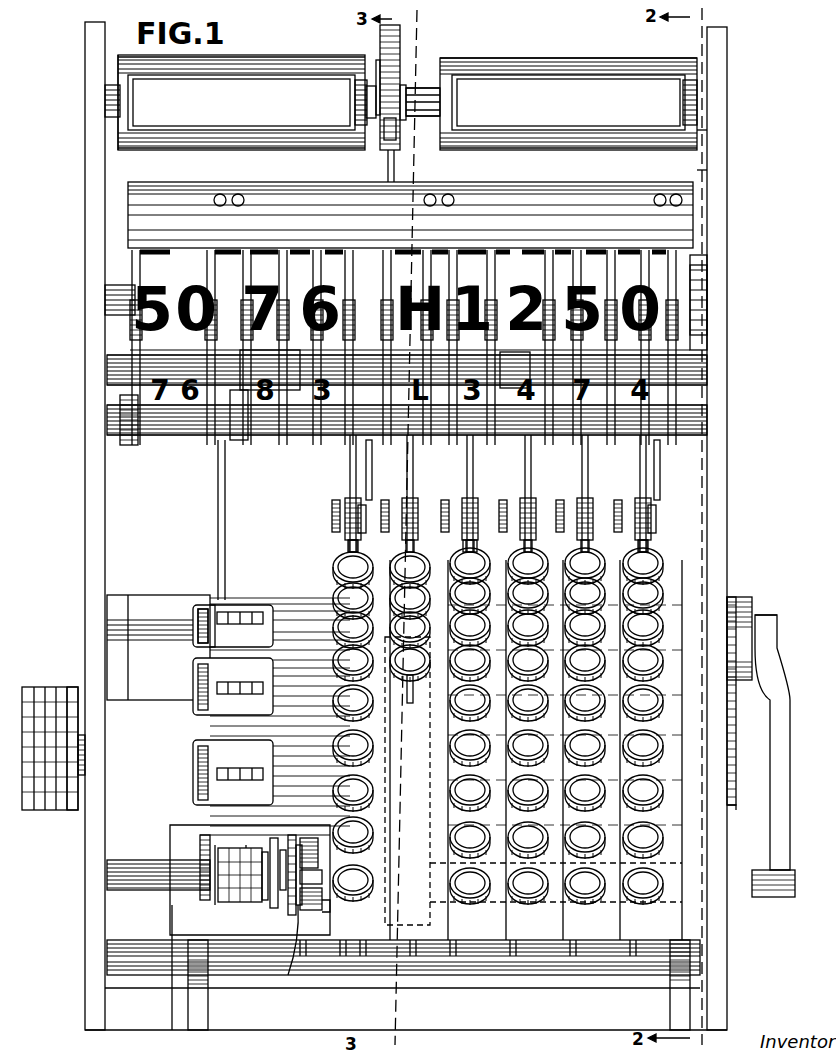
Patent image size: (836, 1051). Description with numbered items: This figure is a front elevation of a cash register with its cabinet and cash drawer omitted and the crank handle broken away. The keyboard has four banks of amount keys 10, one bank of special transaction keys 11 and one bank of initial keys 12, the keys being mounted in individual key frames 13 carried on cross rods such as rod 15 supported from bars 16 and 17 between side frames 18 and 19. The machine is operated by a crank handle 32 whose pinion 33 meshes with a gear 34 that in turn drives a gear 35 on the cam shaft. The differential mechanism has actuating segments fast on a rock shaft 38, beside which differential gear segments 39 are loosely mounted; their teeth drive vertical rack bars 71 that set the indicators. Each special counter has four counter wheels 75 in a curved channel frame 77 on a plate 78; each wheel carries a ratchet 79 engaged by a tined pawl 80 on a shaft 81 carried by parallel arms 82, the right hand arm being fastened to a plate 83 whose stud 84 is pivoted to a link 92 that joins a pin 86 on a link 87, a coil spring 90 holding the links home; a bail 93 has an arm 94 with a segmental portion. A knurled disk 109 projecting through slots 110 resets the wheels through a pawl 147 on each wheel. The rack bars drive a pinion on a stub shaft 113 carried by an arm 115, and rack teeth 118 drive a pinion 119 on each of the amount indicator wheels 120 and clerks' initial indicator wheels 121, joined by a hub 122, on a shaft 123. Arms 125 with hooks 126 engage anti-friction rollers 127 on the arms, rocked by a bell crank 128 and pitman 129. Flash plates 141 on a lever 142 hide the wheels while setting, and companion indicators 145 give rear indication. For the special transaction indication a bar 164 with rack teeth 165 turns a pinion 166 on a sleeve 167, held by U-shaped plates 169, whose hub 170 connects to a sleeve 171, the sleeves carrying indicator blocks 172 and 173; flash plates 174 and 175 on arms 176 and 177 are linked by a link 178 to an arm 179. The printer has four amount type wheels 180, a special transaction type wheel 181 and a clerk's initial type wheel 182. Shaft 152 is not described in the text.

The amount keys 10 is at (559, 733).
The special transaction keys 11 is at (415, 685).
The initial keys 12 is at (373, 790).
The key frames 13 is at (575, 935).
The cross rod 15 is at (552, 975).
The bar 16 is at (133, 603).
The bar 17 is at (462, 1000).
The side frame 18 is at (85, 160).
The side frame 19 is at (727, 106).
The crank handle 32 is at (770, 858).
The pinion 33 is at (730, 600).
The gear 34 is at (736, 722).
The gear 35 is at (733, 806).
The rock shaft 38 is at (145, 892).
The differential gear segment 39 is at (396, 845).
The vertical rack bars 71 is at (348, 460).
The counter wheels 75 is at (225, 710).
The curved channel frame 77 is at (200, 830).
The plate 78 is at (306, 838).
The ratchet 79 is at (220, 852).
The differentially tined pawl 80 is at (225, 905).
The shaft 81 is at (240, 905).
The parallel arms 82 is at (265, 905).
The plate 83 is at (274, 838).
The stud 84 is at (283, 892).
The pin 86 is at (291, 835).
The link 87 is at (300, 845).
The coil spring 90 is at (313, 870).
The link 92 is at (288, 975).
The bail 93 is at (325, 910).
The arm 94 is at (300, 905).
The knurled disk 109 is at (196, 762).
The slots 110 is at (196, 770).
The stub shaft 113 is at (500, 532).
The arm 115 is at (338, 503).
The rack teeth 118 is at (550, 262).
The pinion 119 is at (456, 262).
The amount indicator wheels 120 is at (495, 262).
The clerks' initial indicator wheels 121 is at (340, 262).
The hub 122 is at (390, 262).
The shaft 123 is at (105, 282).
The arms 125 is at (372, 448).
The hook 126 is at (348, 546).
The anti-friction roller 127 is at (364, 510).
The bell crank 128 is at (232, 440).
The pitman 129 is at (218, 456).
The flash plates 141 is at (592, 190).
The lever 142 is at (240, 262).
The companion indicators 145 is at (170, 262).
The pawl 147 is at (697, 248).
The indicator shaft 152 is at (707, 378).
The bar 164 is at (388, 172).
The rack teeth 165 is at (400, 33).
The pinion 166 is at (392, 130).
The sleeve 167 is at (376, 65).
The U-shaped plates 169 is at (380, 120).
The hub 170 is at (404, 85).
The sleeve 171 is at (424, 88).
The indicator block 172 is at (296, 78).
The indicator block 173 is at (492, 78).
The flash plate 174 is at (222, 58).
The flash plate 175 is at (162, 150).
The parallel arms 176 is at (362, 78).
The parallel arms 177 is at (114, 75).
The link 178 is at (697, 168).
The arm 179 is at (707, 330).
The amount type wheels 180 is at (50, 687).
The special transaction type wheel 181 is at (72, 687).
The clerk's initial type wheel 182 is at (78, 710).